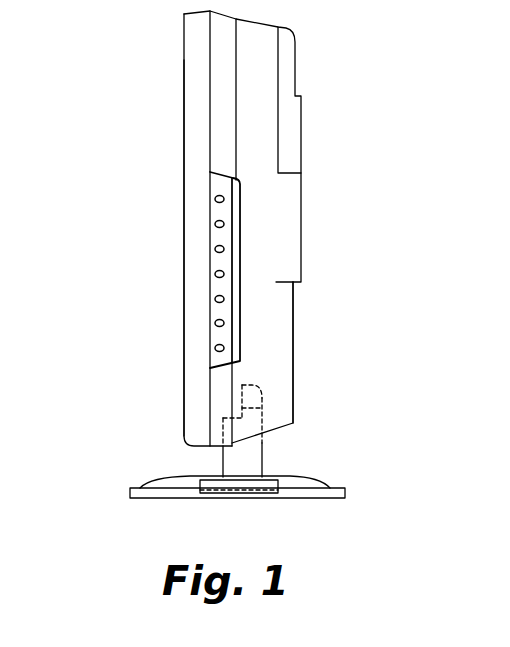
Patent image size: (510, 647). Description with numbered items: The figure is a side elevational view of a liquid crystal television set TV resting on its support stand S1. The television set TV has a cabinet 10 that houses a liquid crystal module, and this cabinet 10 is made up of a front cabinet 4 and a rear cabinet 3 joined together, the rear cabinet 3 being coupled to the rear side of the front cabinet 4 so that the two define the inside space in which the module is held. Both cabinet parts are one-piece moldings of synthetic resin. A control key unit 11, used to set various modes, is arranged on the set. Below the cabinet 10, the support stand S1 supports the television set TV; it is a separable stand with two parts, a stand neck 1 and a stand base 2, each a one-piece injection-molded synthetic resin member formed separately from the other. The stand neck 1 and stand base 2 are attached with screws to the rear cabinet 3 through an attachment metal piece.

The liquid crystal television set TV is at (160, 54).
The cabinet 10 is at (334, 232).
The rear cabinet 3 is at (294, 323).
The front cabinet 4 is at (181, 345).
The control key unit 11 is at (195, 277).
The stand neck 1 is at (263, 446).
The stand base 2 is at (320, 482).
The support stand S1 is at (141, 466).